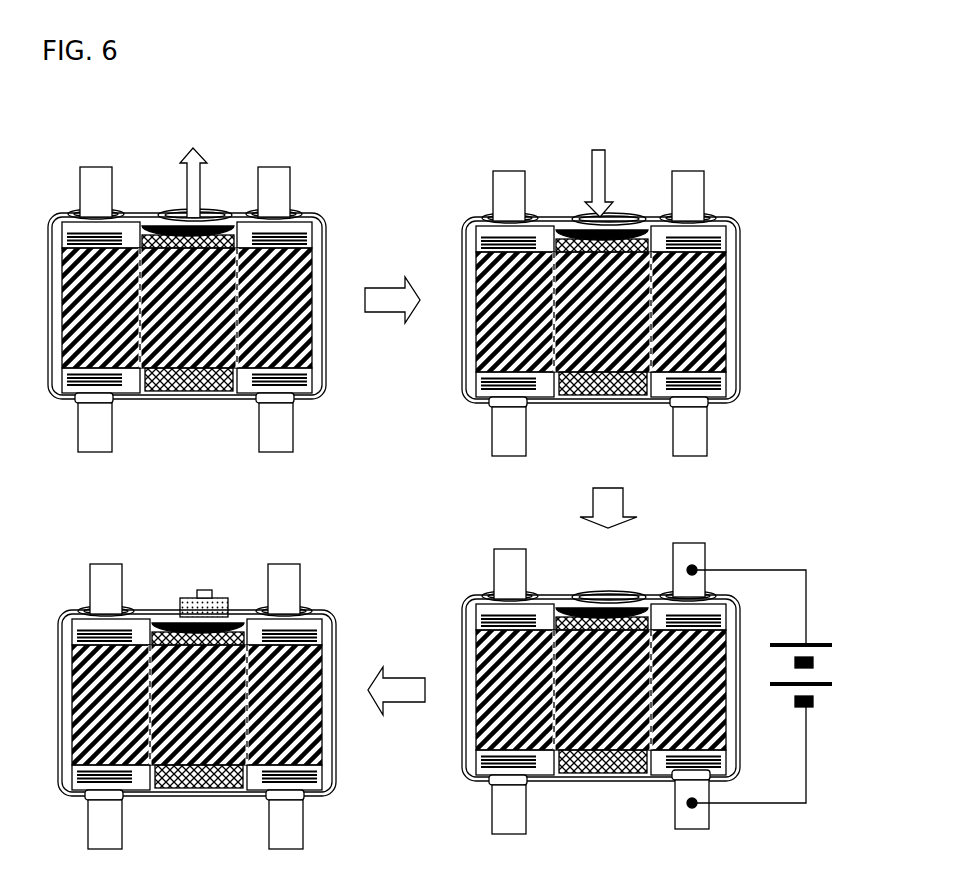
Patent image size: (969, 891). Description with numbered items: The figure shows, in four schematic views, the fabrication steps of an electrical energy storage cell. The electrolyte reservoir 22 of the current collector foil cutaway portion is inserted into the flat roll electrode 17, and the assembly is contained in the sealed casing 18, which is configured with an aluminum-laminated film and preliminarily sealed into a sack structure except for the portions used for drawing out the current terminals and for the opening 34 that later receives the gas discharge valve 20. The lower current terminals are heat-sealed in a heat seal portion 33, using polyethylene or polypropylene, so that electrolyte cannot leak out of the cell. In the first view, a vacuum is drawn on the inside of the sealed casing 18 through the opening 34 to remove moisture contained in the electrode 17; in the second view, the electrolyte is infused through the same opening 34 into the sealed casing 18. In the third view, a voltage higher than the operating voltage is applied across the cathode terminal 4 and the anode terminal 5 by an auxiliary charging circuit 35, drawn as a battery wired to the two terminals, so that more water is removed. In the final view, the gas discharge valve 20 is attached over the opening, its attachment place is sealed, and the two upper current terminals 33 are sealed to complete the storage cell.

The cathode terminal 4 is at (692, 550).
The anode terminal 5 is at (692, 820).
The flat roll electrode 17 is at (283, 325).
The sealed casing 18 is at (330, 214).
The gas discharge valve 20 is at (188, 602).
The electrolyte reservoir 22 is at (175, 385).
The heat seal portion 33 is at (90, 398).
The opening 34 is at (177, 200).
The auxiliary charging circuit 35 is at (758, 568).